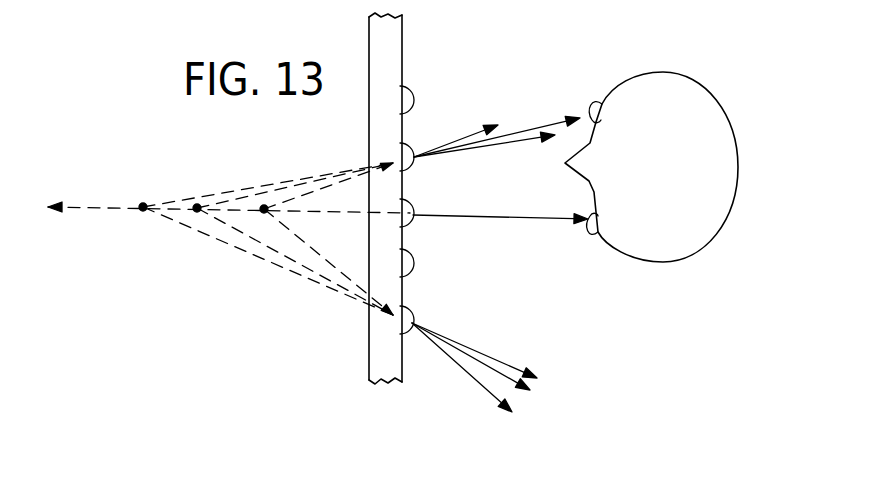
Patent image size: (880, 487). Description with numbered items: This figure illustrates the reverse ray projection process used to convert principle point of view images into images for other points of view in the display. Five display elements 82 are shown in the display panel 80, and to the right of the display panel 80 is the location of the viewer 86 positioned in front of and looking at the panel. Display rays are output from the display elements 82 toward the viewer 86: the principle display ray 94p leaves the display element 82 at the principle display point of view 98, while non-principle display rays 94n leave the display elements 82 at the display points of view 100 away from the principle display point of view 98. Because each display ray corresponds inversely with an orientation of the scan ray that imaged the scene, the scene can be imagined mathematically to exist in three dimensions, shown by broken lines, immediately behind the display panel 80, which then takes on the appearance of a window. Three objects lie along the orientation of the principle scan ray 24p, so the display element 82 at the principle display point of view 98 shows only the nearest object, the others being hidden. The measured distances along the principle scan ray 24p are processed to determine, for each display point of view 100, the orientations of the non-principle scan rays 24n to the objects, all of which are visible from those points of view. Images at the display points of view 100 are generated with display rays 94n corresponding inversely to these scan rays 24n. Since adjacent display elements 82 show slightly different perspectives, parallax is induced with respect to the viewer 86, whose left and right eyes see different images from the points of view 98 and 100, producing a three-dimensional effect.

The display panel 80 is at (388, 40).
The display points of view 100 is at (427, 87).
The display elements 82 is at (410, 108).
The principle display point of view 98 is at (425, 235).
The viewer 86 is at (678, 105).
The non-principle display rays 94n is at (548, 125).
The principle display ray 94p is at (510, 228).
The non-principle scan rays 24n is at (243, 188).
The principle scan ray 24p is at (350, 215).